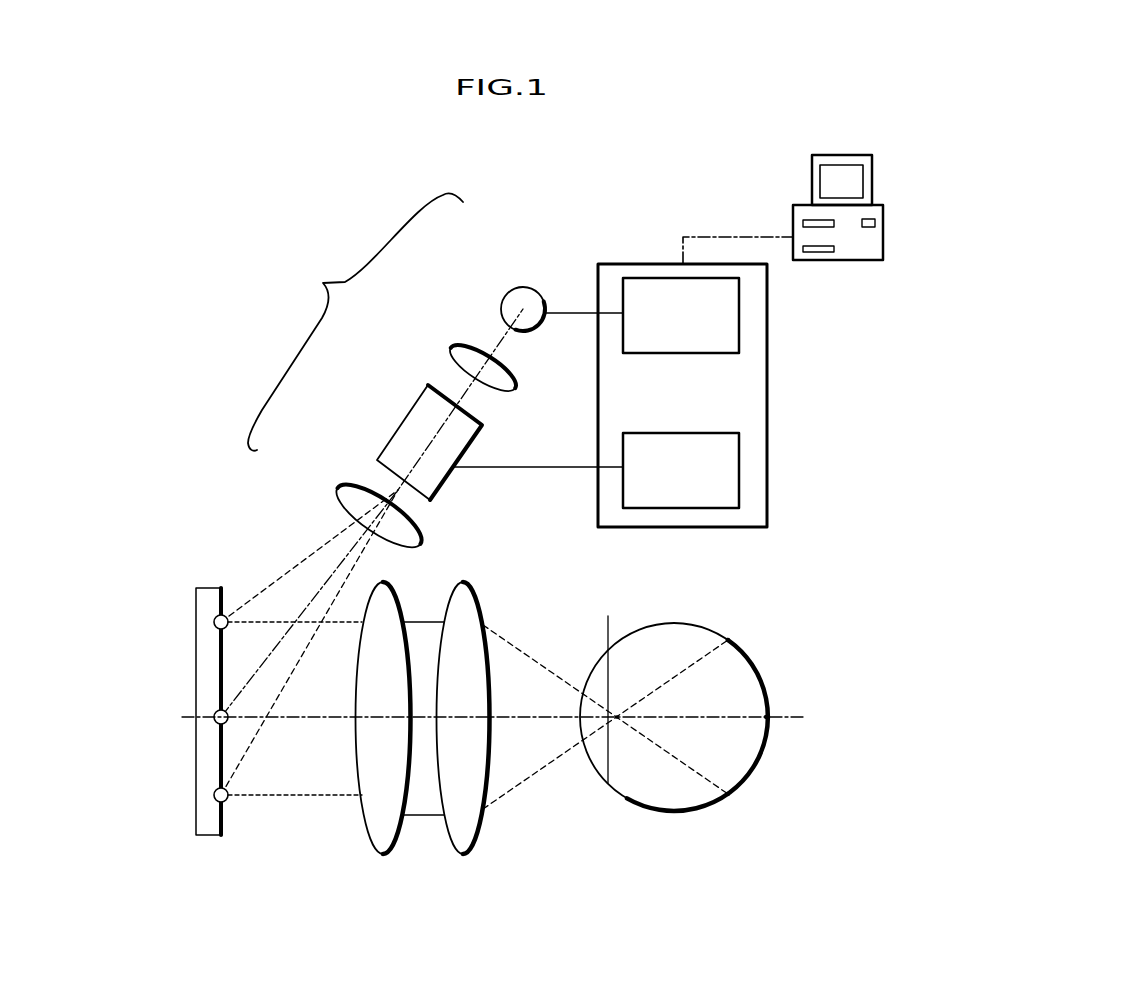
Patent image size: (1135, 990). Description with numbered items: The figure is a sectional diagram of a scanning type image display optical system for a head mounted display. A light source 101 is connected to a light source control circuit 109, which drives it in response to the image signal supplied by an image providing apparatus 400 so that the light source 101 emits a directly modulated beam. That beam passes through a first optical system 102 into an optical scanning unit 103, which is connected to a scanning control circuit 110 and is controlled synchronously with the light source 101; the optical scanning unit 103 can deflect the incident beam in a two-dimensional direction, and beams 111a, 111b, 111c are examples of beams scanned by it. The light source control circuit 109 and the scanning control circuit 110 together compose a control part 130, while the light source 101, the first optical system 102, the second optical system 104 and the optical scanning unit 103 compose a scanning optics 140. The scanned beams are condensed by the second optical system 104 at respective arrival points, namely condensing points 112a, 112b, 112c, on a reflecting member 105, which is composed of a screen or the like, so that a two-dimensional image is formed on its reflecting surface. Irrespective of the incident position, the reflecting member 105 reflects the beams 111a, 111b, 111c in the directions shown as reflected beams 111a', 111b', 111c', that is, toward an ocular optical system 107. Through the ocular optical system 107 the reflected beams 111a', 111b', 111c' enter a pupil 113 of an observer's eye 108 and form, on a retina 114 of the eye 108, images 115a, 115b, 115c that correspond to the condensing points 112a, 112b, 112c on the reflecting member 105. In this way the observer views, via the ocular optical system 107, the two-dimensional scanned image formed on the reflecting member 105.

The light source 101 is at (511, 288).
The first optical system 102 is at (462, 345).
The optical scanning unit 103 is at (410, 413).
The second optical system 104 is at (347, 492).
The reflecting member 105 is at (207, 592).
The ocular optical system 107 is at (483, 875).
The observer's eye 108 is at (657, 842).
The light source control circuit 109 is at (736, 318).
The scanning control circuit 110 is at (736, 466).
The beam 111a is at (321, 513).
The beam 111b is at (309, 556).
The beam 111c is at (257, 642).
The reflected beam 111a' is at (492, 745).
The reflected beam 111b' is at (295, 666).
The reflected beam 111c' is at (295, 824).
The condensing point 112a is at (215, 714).
The condensing point 112b is at (215, 618).
The condensing point 112c is at (216, 803).
The pupil 113 is at (617, 717).
The retina 114 is at (753, 755).
The image 115a is at (760, 712).
The image 115b is at (723, 797).
The image 115c is at (728, 638).
The control part 130 is at (768, 386).
The scanning optics 140 is at (355, 321).
The image providing apparatus 400 is at (812, 182).